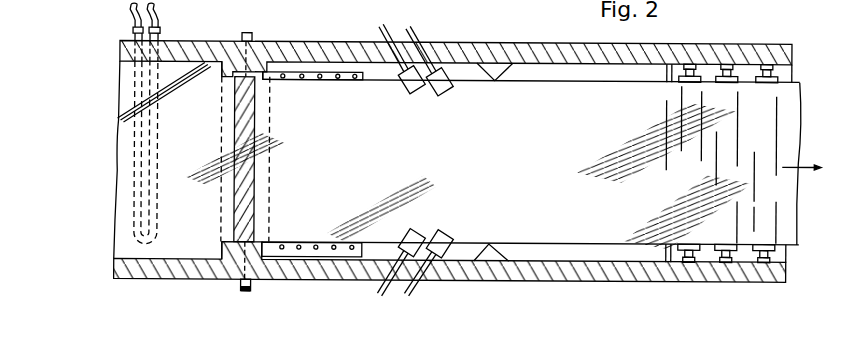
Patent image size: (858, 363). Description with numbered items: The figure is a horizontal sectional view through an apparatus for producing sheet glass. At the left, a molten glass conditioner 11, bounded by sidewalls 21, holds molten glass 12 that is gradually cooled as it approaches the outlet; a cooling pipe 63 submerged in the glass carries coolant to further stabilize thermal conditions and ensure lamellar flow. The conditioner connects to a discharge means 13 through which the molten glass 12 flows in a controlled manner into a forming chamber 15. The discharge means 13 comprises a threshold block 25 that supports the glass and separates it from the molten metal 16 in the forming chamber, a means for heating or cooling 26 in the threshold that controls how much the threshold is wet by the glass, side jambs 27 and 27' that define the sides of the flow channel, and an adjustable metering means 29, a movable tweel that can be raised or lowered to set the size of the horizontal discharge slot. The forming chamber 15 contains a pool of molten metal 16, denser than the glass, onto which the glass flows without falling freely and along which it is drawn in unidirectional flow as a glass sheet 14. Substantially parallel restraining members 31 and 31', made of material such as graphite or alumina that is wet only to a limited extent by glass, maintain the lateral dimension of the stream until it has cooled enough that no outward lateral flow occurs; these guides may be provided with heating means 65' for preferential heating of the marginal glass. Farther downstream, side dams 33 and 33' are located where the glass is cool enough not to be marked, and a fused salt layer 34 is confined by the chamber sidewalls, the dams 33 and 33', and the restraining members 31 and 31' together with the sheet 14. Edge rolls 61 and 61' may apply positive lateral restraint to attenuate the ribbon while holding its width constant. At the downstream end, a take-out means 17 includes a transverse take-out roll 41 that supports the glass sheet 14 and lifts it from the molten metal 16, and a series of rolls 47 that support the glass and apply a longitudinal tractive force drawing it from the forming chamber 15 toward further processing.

The molten glass conditioner 11 is at (126, 286).
The molten glass 12 is at (126, 219).
The discharge means 13 is at (264, 87).
The glass sheet 14 is at (508, 171).
The forming chamber 15 is at (491, 28).
The molten metal 16 is at (588, 72).
The take-out means 17 is at (805, 67).
The sidewalls 21 is at (128, 50).
The threshold block 25 is at (271, 202).
The means for heating or cooling 26 is at (252, 33).
The side jamb 27 is at (201, 49).
The side jamb 27' is at (192, 245).
The adjustable metering means 29 is at (235, 136).
The restraining member 31 is at (330, 88).
The restraining member 31' is at (311, 273).
The side dam 33 is at (510, 85).
The side dam 33' is at (510, 240).
The fused salt layer 34 is at (473, 75).
The take-out roll 41 is at (678, 252).
The rolls 47 is at (745, 75).
The edge rolls 61 is at (419, 71).
The lower electrode 61' is at (430, 251).
The cooling pipe 63 is at (133, 165).
The perforations 65' is at (313, 231).